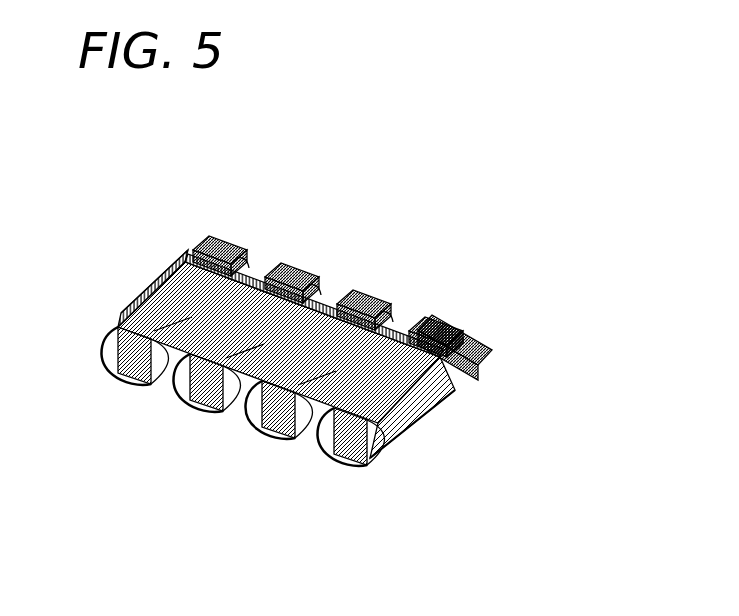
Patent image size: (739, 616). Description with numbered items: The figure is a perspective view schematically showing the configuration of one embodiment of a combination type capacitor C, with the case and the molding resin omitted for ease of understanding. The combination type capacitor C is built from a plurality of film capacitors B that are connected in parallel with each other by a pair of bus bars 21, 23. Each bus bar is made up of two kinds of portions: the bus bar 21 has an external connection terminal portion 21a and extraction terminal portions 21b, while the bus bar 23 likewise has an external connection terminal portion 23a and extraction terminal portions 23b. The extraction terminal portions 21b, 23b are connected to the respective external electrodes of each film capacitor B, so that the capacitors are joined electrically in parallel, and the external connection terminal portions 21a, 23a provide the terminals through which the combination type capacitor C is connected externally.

The bus bar 21 is at (522, 448).
The external connection terminal portion 21a is at (453, 393).
The extraction terminal portion 21b is at (324, 453).
The bus bar 23 is at (452, 188).
The external connection terminal portion 23a is at (480, 347).
The extraction terminal portion 23b is at (420, 320).
The film capacitor B is at (163, 333).
The combination type capacitor C is at (496, 137).